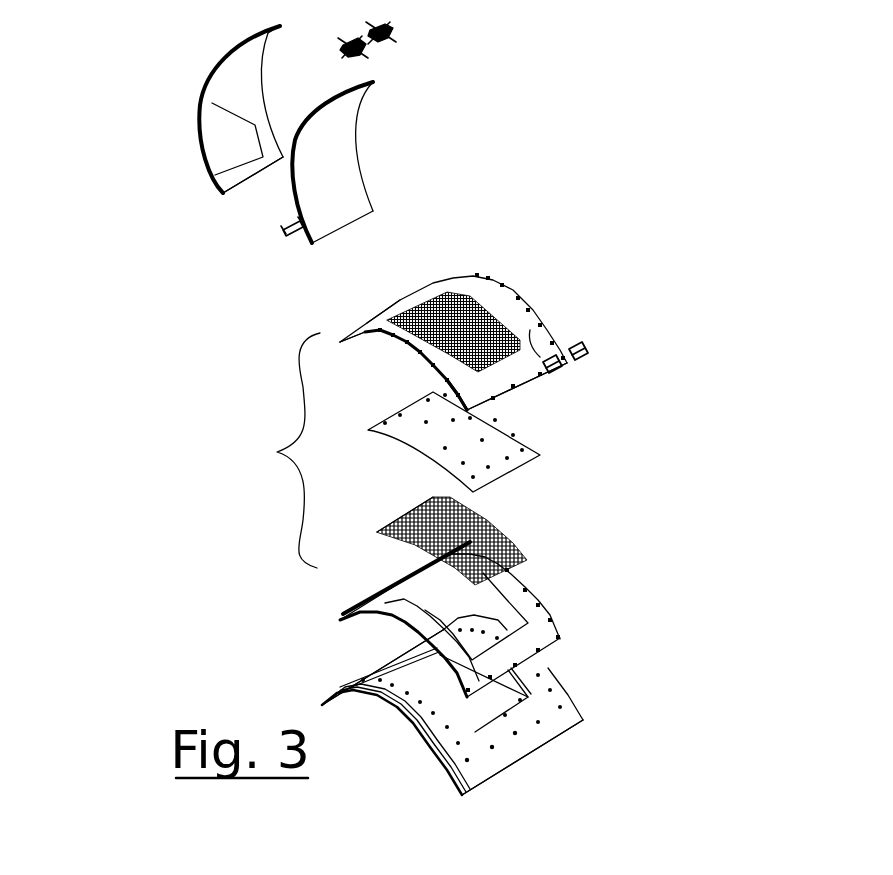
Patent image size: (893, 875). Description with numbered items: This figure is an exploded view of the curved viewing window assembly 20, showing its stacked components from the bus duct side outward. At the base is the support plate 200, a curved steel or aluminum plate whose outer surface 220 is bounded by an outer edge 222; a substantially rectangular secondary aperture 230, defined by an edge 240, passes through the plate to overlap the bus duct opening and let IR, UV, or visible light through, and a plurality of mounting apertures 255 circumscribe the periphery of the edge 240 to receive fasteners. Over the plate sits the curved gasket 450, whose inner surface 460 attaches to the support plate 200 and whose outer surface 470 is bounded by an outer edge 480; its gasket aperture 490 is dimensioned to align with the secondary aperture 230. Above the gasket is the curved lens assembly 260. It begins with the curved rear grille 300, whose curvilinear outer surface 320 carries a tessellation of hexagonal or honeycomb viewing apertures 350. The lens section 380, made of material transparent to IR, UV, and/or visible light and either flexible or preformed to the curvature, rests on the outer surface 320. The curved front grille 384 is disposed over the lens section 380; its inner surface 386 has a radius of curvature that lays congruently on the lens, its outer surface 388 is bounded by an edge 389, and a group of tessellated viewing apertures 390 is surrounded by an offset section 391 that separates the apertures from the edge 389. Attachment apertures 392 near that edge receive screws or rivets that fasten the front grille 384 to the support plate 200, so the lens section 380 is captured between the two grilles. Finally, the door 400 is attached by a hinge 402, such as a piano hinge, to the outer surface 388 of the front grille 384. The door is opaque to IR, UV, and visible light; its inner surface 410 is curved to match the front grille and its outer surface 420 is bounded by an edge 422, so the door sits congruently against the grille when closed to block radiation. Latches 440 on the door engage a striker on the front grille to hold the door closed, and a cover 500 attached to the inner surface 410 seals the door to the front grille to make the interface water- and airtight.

The curved viewing window assembly 20 is at (466, 112).
The support plate 200 is at (584, 690).
The outer surface 220 is at (560, 720).
The outer edge 222 is at (545, 740).
The secondary aperture 230 is at (420, 680).
The edge 240 is at (447, 705).
The mounting apertures 255 is at (515, 733).
The curved lens assembly 260 is at (277, 450).
The curved rear grille 300 is at (524, 568).
The outer surface 320 is at (387, 528).
The viewing apertures 350 is at (520, 560).
The lens section 380 is at (518, 478).
The curved front grille 384 is at (520, 396).
The inner surface 386 is at (398, 328).
The outer surface 388 is at (545, 337).
The edge 389 is at (425, 350).
The viewing apertures 390 is at (513, 320).
The offset section 391 is at (553, 372).
The attachment apertures 392 is at (501, 285).
The door 400 is at (217, 187).
The hinge 402 is at (276, 219).
The inner surface 410 is at (214, 173).
The outer surface 420 is at (193, 89).
The edge 422 is at (263, 97).
The latches 440 is at (368, 50).
The curved gasket 450 is at (592, 351).
The inner surface 460 is at (553, 638).
The outer surface 470 is at (533, 622).
The outer edge 480 is at (425, 660).
The gasket aperture 490 is at (420, 590).
The cover 500 is at (338, 137).